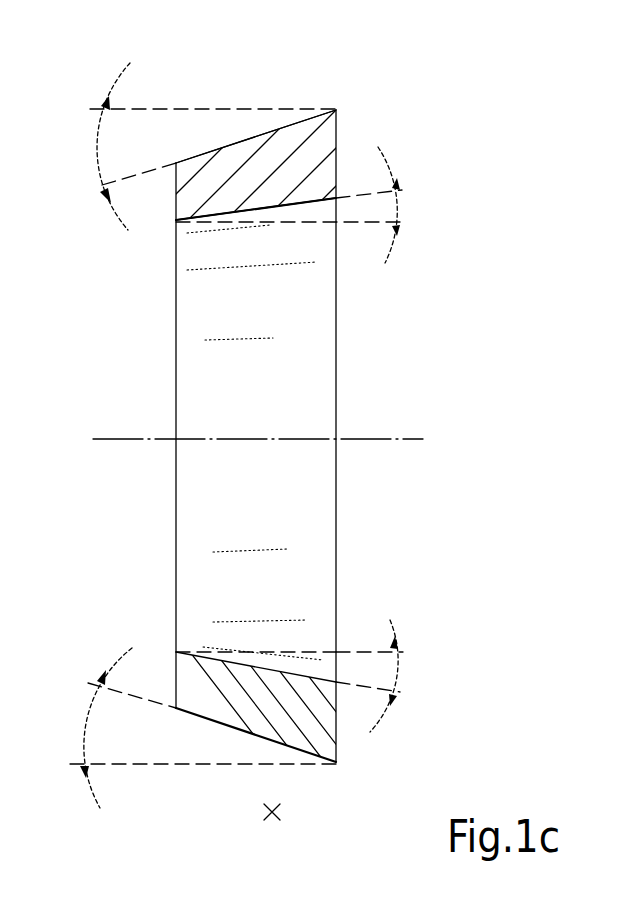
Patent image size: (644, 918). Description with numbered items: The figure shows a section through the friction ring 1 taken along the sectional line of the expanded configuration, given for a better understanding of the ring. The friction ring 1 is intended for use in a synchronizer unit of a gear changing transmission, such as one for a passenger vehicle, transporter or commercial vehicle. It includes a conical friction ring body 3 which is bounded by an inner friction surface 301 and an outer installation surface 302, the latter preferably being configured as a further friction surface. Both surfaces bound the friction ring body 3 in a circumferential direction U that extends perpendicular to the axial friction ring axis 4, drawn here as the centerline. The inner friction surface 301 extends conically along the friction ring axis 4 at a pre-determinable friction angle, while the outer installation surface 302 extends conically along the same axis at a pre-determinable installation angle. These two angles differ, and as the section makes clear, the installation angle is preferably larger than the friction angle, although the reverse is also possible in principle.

The friction ring 1 is at (385, 443).
The conical friction ring body 3 is at (545, 172).
The outer installation surface 302 is at (234, 141).
The inner friction surface 301 is at (273, 207).
The friction ring axis 4 is at (405, 441).
The circumferential direction U is at (282, 808).